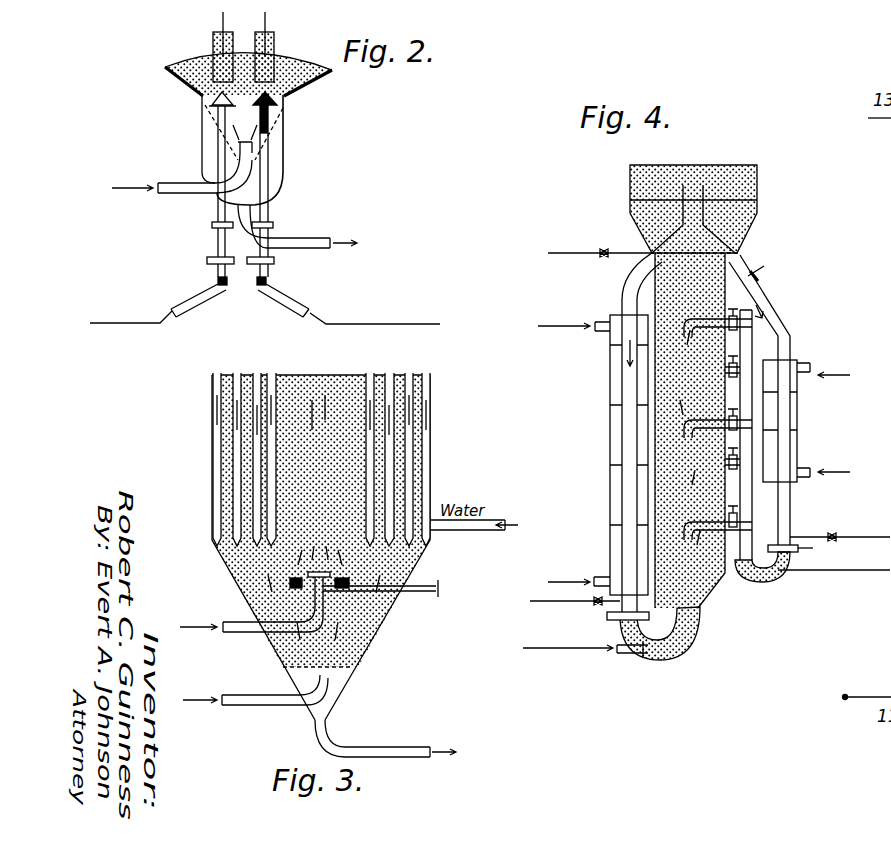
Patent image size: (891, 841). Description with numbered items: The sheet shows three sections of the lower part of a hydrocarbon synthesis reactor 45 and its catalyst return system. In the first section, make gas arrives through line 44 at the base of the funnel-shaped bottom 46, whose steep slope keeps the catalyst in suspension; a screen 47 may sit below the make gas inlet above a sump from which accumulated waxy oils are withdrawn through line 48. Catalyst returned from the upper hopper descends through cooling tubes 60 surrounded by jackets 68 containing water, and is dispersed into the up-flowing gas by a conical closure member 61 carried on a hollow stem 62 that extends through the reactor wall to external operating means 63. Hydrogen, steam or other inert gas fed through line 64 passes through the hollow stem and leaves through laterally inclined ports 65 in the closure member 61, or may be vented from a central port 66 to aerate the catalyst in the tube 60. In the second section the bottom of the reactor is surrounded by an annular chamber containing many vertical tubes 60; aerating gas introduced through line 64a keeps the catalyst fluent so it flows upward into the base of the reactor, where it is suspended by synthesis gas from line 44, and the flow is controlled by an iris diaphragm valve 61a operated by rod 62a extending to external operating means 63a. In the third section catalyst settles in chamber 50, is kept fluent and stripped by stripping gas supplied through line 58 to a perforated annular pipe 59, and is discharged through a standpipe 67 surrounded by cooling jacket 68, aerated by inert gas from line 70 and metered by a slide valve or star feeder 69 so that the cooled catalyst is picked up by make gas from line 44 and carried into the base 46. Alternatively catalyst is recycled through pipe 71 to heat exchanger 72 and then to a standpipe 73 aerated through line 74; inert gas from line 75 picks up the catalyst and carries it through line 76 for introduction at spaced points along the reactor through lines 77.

In FIG. 2, the line 44 is at (190, 188).
In FIG. 3, the line 44 is at (233, 634).
In FIG. 4, the line 44 is at (620, 655).
In FIG. 4, the synthesis reactor 45 is at (648, 474).
In FIG. 2, the funnel-shaped bottom 46 is at (278, 88).
In FIG. 3, the funnel-shaped bottom 46 is at (321, 547).
In FIG. 4, the funnel-shaped bottom 46 is at (712, 597).
In FIG. 2, the screen 47 is at (208, 127).
In FIG. 3, the screen 47 is at (342, 676).
In FIG. 2, the line 48 is at (287, 240).
In FIG. 3, the line 48 is at (416, 759).
In FIG. 4, the chamber 50 is at (740, 189).
In FIG. 4, the line 58 is at (580, 256).
In FIG. 4, the perforated annular pipe 59 is at (740, 256).
In FIG. 2, the cooling tubes 60 is at (262, 44).
In FIG. 3, the cooling tubes 60 is at (228, 448).
In FIG. 2, the closure member 61 is at (213, 101).
In FIG. 2, the hollow shaft or stem 62 is at (270, 158).
In FIG. 2, the external operating means 63 is at (277, 262).
In FIG. 2, the line 64 is at (188, 303).
In FIG. 2, the laterally inclined ports 65 is at (266, 103).
In FIG. 2, the port 66 is at (272, 99).
In FIG. 4, the standpipe 67 is at (625, 284).
In FIG. 3, the cooling jacket 68 is at (214, 393).
In FIG. 4, the cooling jacket 68 is at (611, 428).
In FIG. 4, the slide valve or star feeder 69 is at (607, 619).
In FIG. 4, the line 70 is at (548, 605).
In FIG. 4, the pipe 71 is at (758, 292).
In FIG. 4, the heat exchanger 72 is at (798, 408).
In FIG. 4, the standpipe 73 is at (780, 509).
In FIG. 4, the line 74 is at (800, 536).
In FIG. 4, the line 75 is at (770, 578).
In FIG. 4, the line 76 is at (752, 499).
In FIG. 4, the lines 77 is at (740, 370).
In FIG. 3, the external operating means 63a is at (440, 594).
In FIG. 3, the rod 62a is at (362, 621).
In FIG. 3, the iris diaphragm valve 61a is at (350, 636).
In FIG. 3, the line 64a is at (236, 706).